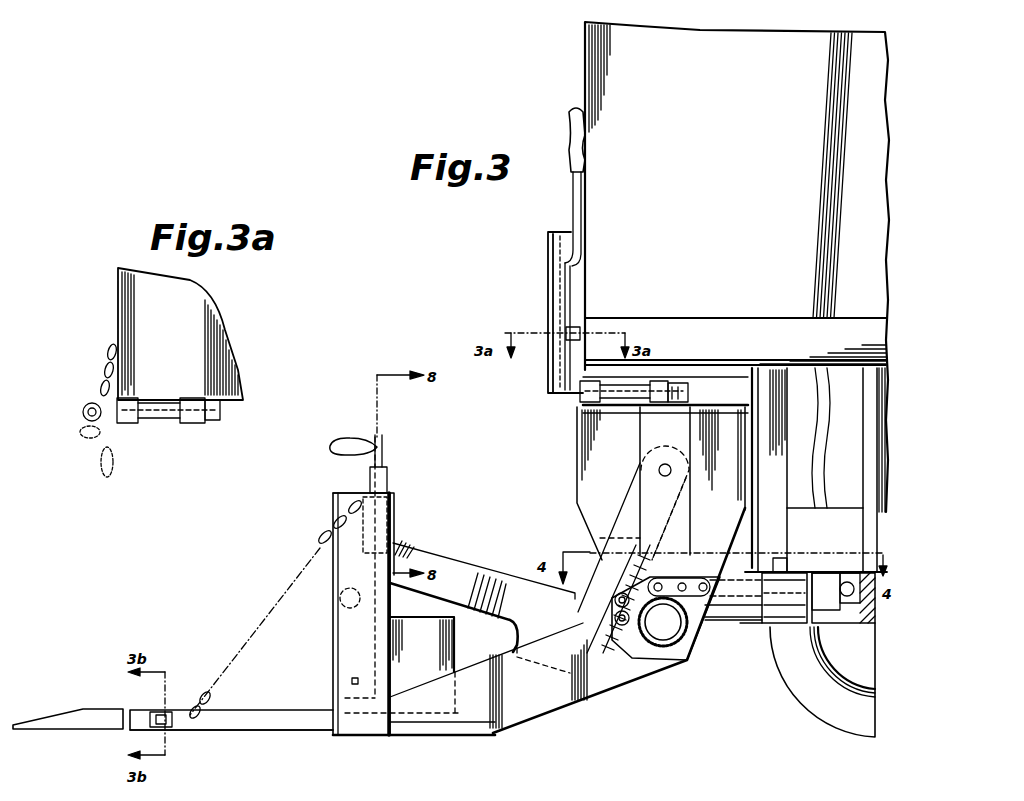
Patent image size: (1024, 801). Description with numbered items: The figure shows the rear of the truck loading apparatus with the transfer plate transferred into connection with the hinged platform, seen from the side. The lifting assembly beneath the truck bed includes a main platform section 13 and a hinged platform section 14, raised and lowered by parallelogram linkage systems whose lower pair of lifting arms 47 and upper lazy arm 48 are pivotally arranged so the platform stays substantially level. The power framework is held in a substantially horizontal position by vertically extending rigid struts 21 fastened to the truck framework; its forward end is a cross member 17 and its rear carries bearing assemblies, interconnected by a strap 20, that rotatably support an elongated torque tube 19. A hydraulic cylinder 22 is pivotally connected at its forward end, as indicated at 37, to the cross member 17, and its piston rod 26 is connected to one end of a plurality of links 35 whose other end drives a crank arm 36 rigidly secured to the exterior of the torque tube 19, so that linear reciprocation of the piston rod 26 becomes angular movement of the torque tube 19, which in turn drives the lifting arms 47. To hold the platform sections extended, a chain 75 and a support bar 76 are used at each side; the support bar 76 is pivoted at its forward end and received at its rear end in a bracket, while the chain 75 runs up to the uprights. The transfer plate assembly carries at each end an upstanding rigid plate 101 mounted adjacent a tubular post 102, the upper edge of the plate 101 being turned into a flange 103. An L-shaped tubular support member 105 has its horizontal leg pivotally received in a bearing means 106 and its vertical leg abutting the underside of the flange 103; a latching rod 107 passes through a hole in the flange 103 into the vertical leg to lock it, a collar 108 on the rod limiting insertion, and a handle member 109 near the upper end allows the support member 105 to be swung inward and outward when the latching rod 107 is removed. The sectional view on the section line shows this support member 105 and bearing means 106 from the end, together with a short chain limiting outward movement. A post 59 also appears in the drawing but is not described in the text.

In FIG. 3, the main platform section 13 is at (280, 708).
In FIG. 3, the hinged platform section 14 is at (70, 682).
In FIG. 3, the cross member 17 is at (867, 625).
In FIG. 3, the torque tube 19 is at (665, 640).
In FIG. 3, the strap 20 is at (689, 519).
In FIG. 3, the vertically extending rigid struts 21 is at (863, 468).
In FIG. 3, the hydraulic cylinder 22 is at (785, 607).
In FIG. 3, the piston rod 26 is at (748, 610).
In FIG. 3, the links 35 is at (682, 545).
In FIG. 3, the crank arm 36 is at (640, 633).
In FIG. 3, the pivotal connection 37 is at (852, 572).
In FIG. 3, the lifting arms 47 is at (558, 700).
In FIG. 3, the upper lazy arm 48 is at (462, 562).
In FIG. 3, the post 59 is at (340, 628).
In FIG. 3, the chain 75 is at (318, 533).
In FIG. 3, the support bar 76 is at (262, 728).
In FIG. 3, the rigid plate 101 is at (446, 650).
In FIG. 3, the tubular post 102 is at (347, 490).
In FIG. 3, the flange 103 is at (412, 620).
In FIG. 3, the support member 105 is at (568, 288).
In FIG. 3A, the support member 105 is at (84, 412).
In FIG. 3, the bearing means 106 is at (668, 380).
In FIG. 3A, the bearing means 106 is at (190, 425).
In FIG. 3, the latching rod 107 is at (383, 448).
In FIG. 3, the collar 108 is at (388, 480).
In FIG. 3, the handle member 109 is at (578, 218).